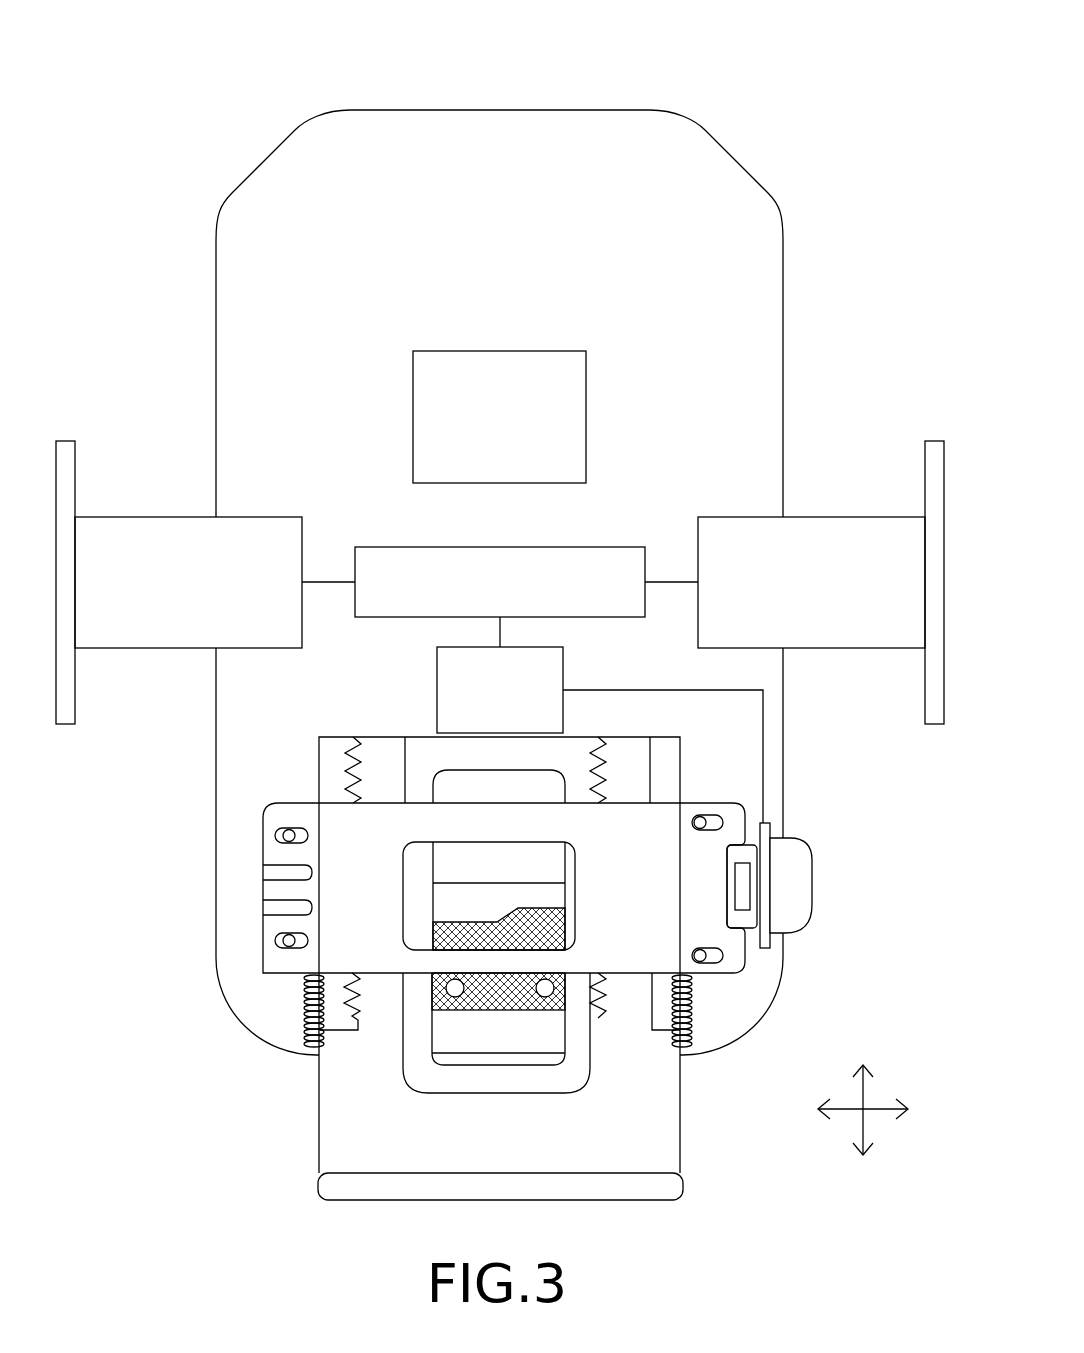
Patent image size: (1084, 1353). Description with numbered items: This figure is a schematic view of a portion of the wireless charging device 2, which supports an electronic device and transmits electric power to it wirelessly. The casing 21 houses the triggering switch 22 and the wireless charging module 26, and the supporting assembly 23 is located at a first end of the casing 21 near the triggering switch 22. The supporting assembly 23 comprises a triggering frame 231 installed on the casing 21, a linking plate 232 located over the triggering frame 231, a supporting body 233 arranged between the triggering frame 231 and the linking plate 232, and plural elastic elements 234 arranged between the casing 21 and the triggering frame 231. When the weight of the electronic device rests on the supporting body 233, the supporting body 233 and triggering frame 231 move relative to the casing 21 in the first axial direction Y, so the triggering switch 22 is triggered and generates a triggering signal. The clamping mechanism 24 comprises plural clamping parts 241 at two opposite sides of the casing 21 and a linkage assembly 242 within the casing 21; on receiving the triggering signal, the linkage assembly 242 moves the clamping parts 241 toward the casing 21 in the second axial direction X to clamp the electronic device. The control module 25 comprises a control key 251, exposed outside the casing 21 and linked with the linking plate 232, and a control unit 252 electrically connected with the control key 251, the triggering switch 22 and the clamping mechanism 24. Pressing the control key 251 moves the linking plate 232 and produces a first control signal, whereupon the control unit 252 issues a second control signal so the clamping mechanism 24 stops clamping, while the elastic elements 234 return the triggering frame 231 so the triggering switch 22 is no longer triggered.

The wireless charging device 2 is at (713, 26).
The casing 21 is at (763, 368).
The triggering switch 22 is at (553, 920).
The supporting assembly 23 is at (448, 975).
The triggering frame 231 is at (273, 873).
The linking plate 232 is at (442, 869).
The supporting body 233 is at (325, 1108).
The elastic elements 234 is at (312, 1025).
The clamping mechanism 24 is at (500, 582).
The clamping parts 241 is at (158, 632).
The linkage assembly 242 is at (580, 565).
The control module 25 is at (622, 797).
The control key 251 is at (795, 898).
The control unit 252 is at (445, 708).
The wireless charging module 26 is at (528, 366).